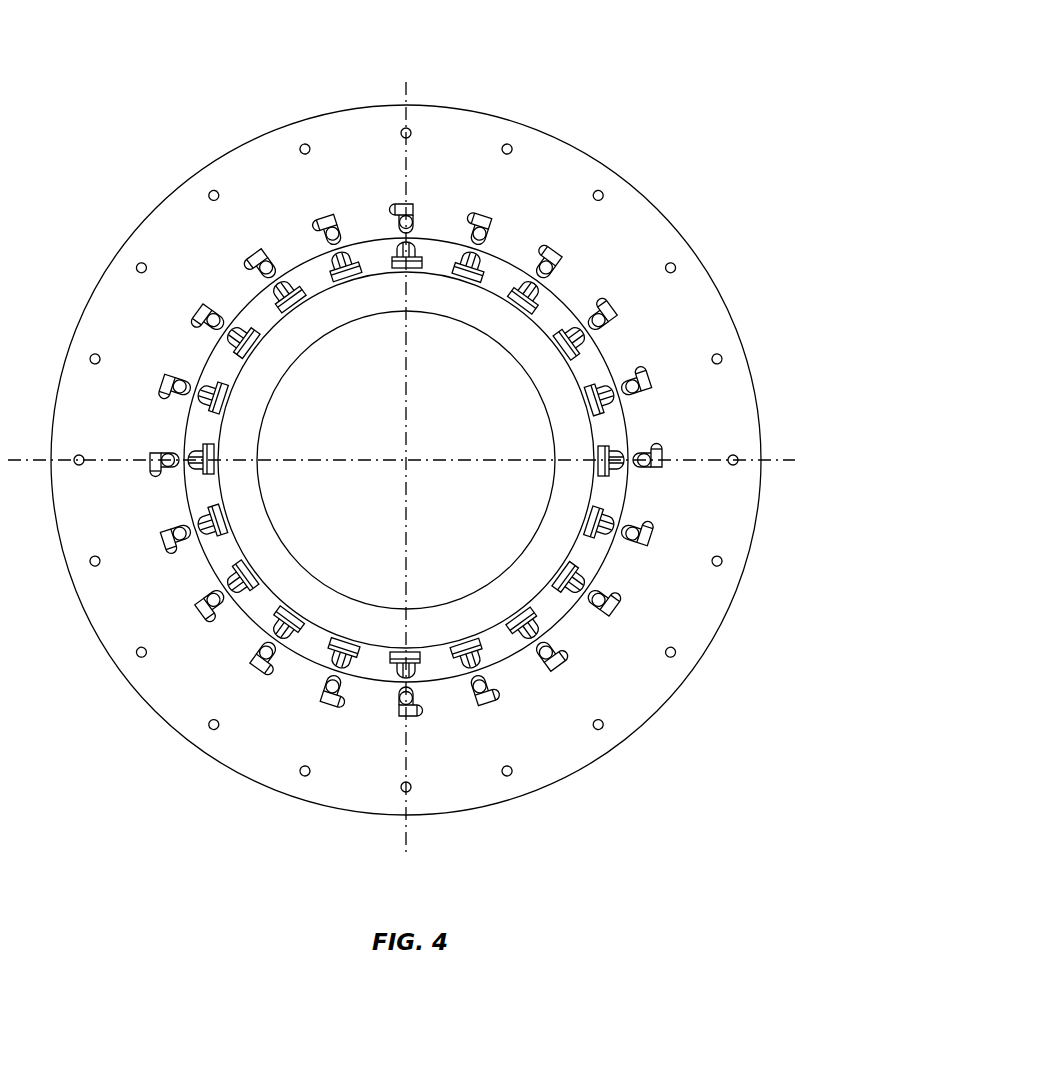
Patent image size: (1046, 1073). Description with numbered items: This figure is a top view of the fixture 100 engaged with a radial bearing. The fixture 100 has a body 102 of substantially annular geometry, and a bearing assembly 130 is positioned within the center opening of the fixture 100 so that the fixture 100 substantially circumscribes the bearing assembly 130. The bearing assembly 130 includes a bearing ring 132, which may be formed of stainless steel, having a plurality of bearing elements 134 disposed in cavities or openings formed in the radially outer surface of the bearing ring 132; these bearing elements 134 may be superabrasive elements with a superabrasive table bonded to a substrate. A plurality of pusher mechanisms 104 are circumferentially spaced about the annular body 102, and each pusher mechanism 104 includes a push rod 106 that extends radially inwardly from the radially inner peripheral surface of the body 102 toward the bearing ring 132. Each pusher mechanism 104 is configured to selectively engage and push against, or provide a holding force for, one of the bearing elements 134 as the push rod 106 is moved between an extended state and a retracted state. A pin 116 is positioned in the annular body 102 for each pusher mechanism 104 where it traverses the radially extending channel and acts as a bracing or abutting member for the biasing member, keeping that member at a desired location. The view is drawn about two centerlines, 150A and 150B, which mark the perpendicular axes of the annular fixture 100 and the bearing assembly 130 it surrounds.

The fixture 100 is at (653, 94).
The body 102 is at (645, 188).
The pusher mechanism 104 is at (422, 448).
The push rod 106 is at (284, 270).
The pin 116 is at (603, 193).
The bearing assembly 130 is at (481, 343).
The bearing ring 132 is at (533, 383).
The bearing element 134 is at (289, 285).
The vertical axis 150A is at (408, 93).
The horizontal axis 150B is at (348, 458).